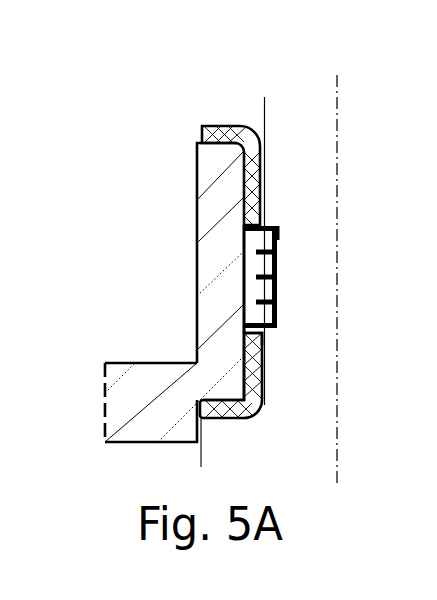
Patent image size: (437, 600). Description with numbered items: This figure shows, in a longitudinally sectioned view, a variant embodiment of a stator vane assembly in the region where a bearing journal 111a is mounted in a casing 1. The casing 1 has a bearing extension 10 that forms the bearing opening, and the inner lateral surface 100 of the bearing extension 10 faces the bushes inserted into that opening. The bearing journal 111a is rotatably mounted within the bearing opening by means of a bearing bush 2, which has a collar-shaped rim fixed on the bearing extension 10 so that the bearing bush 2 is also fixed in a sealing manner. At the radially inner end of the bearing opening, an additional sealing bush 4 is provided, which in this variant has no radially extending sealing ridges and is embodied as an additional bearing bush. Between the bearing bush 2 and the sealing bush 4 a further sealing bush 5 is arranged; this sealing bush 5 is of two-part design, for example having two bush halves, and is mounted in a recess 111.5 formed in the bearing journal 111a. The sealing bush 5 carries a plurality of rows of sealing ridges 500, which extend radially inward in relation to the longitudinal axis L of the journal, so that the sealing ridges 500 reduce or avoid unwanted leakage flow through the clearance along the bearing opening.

The casing 1 is at (95, 356).
The bearing bush 2 is at (223, 126).
The sealing bush 4 is at (227, 408).
The sealing bush 5 is at (236, 262).
The bearing extension 10 is at (190, 167).
The inner lateral surface 100 is at (266, 333).
The bearing journal 111a is at (320, 175).
The recess 111.5 is at (279, 232).
The sealing ridges 500 is at (278, 275).
The longitudinal axis L is at (338, 85).